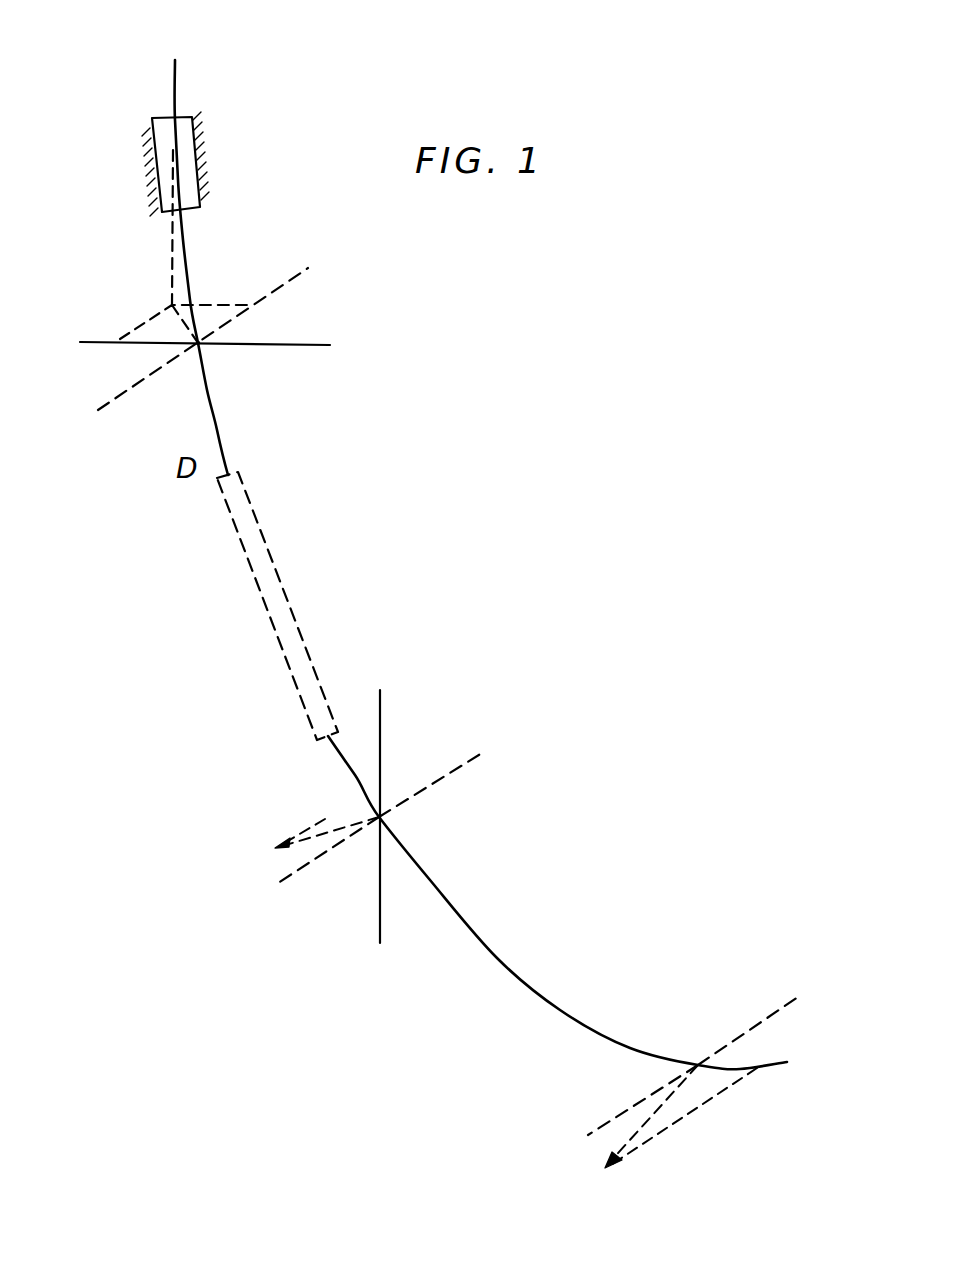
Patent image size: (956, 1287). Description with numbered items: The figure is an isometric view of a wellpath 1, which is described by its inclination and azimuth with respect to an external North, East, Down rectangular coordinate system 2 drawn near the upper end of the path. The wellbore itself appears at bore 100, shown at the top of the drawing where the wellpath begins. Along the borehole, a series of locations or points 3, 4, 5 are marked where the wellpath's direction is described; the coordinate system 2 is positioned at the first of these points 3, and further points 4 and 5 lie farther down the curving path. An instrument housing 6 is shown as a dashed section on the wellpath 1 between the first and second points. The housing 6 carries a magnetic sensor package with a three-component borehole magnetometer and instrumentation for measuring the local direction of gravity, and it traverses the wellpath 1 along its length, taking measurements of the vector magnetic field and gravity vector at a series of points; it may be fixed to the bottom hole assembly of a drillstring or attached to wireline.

The wellpath 1 is at (175, 80).
The bore 100 is at (152, 142).
The North, East, Down, Rectangular coordinate system 2 is at (236, 283).
The point 3 is at (200, 345).
The point 4 is at (382, 818).
The point 5 is at (698, 1063).
The instrument housing 6 is at (262, 593).